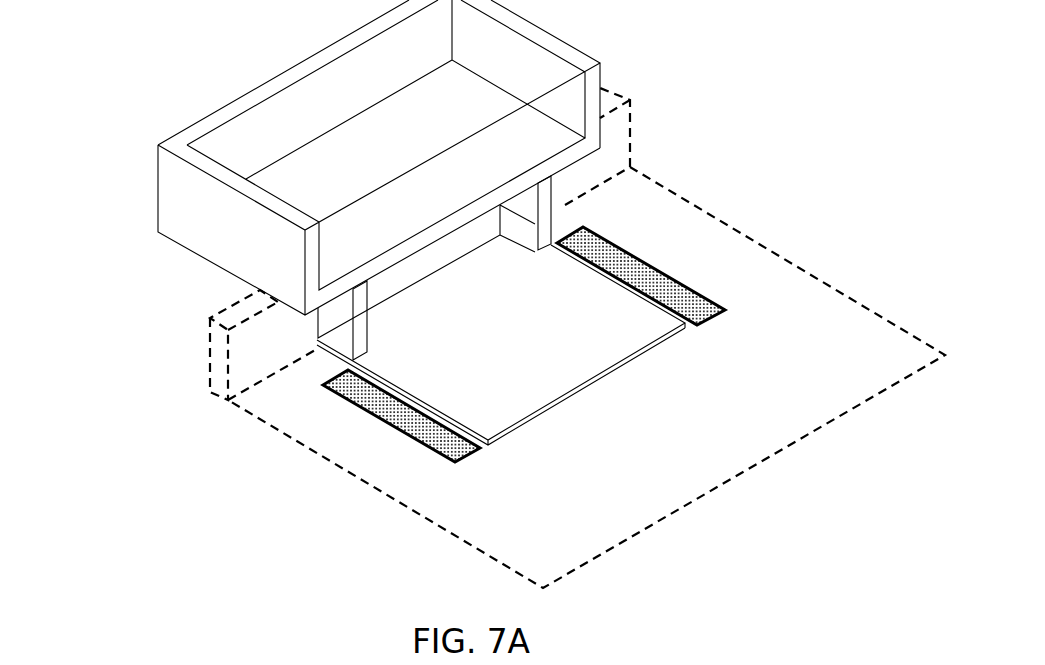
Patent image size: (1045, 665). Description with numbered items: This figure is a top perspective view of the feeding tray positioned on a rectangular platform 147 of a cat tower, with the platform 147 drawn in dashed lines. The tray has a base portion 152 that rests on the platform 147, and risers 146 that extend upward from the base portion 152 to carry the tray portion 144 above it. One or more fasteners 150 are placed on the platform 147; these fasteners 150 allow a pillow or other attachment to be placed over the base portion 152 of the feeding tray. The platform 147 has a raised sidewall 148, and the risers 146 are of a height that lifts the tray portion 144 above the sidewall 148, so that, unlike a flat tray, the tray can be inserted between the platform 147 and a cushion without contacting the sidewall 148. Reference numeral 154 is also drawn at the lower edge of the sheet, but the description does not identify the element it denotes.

The tray portion 144 is at (306, 48).
The risers 146 is at (560, 216).
The platform 147 is at (808, 318).
The sidewall 148 is at (222, 362).
The fasteners 150 is at (397, 436).
The base portion 152 is at (592, 406).
The base 154 is at (324, 664).